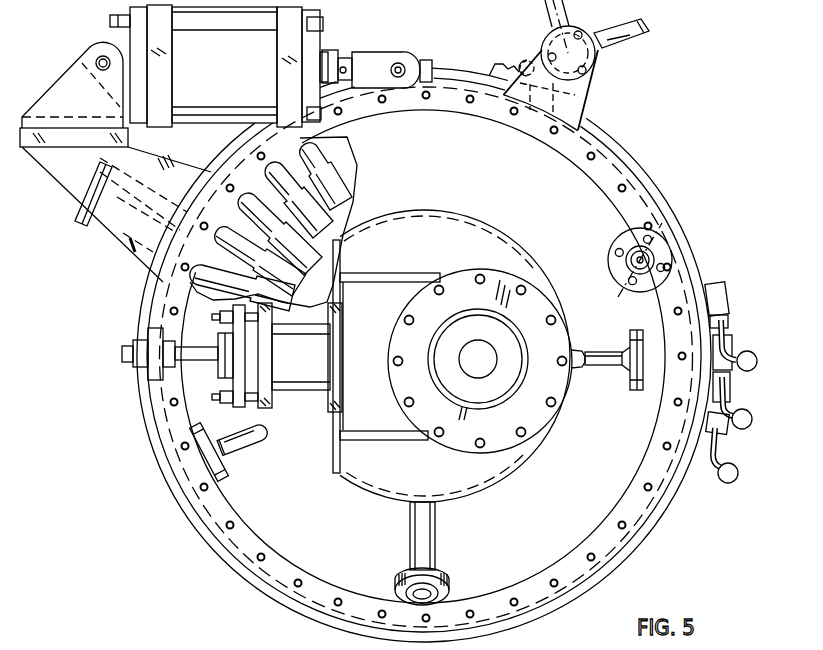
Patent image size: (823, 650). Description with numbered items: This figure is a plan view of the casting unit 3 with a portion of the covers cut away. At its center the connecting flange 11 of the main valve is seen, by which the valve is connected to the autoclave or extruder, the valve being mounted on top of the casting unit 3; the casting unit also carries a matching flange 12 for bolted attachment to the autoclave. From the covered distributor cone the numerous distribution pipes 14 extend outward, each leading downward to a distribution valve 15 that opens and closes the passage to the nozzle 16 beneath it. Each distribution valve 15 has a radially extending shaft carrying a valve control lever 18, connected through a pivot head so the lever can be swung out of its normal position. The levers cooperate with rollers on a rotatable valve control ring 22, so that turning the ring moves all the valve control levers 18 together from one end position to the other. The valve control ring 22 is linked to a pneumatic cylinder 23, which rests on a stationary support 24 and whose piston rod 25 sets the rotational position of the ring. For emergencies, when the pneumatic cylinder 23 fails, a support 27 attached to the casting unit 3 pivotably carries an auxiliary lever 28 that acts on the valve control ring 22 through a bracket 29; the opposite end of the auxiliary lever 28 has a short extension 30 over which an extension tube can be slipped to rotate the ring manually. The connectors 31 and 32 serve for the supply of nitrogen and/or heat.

The casting unit 3 is at (311, 362).
The connecting flange 11 is at (533, 300).
The flange 12 is at (348, 136).
The distribution pipes 14 is at (340, 172).
The distribution valve 15 is at (732, 393).
The nozzle 16 is at (602, 26).
The valve control lever 18 is at (733, 348).
The valve control ring 22 is at (658, 193).
The pneumatic cylinder 23 is at (238, 71).
The stationary support 24 is at (96, 61).
The piston rod 25 is at (341, 52).
The support 27 is at (593, 88).
The auxiliary lever 28 is at (524, 62).
The bracket 29 is at (496, 66).
The short extension 30 is at (640, 42).
The connector 31 is at (271, 434).
The connector 32 is at (595, 355).